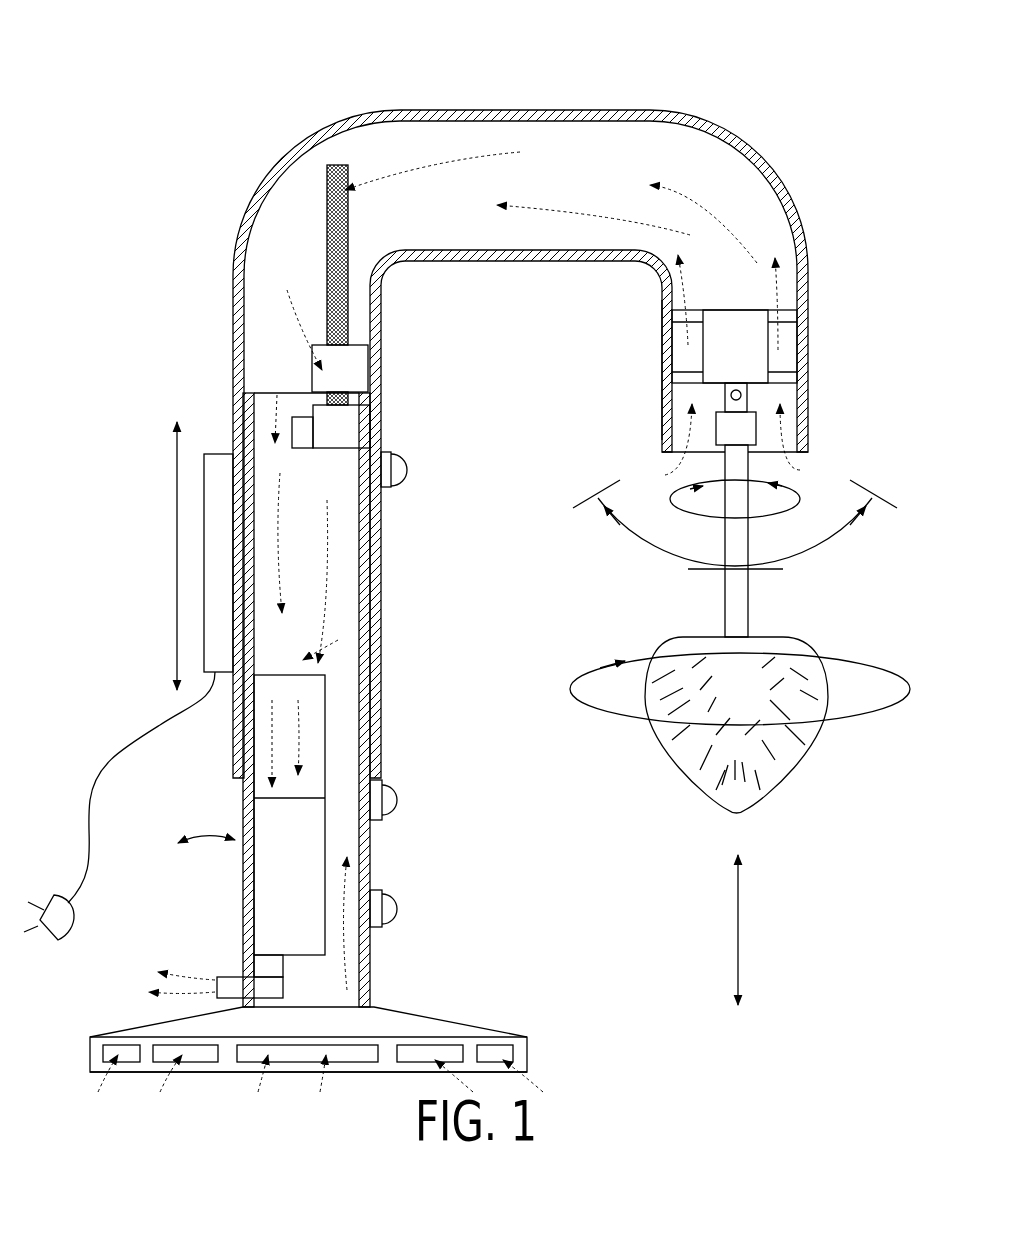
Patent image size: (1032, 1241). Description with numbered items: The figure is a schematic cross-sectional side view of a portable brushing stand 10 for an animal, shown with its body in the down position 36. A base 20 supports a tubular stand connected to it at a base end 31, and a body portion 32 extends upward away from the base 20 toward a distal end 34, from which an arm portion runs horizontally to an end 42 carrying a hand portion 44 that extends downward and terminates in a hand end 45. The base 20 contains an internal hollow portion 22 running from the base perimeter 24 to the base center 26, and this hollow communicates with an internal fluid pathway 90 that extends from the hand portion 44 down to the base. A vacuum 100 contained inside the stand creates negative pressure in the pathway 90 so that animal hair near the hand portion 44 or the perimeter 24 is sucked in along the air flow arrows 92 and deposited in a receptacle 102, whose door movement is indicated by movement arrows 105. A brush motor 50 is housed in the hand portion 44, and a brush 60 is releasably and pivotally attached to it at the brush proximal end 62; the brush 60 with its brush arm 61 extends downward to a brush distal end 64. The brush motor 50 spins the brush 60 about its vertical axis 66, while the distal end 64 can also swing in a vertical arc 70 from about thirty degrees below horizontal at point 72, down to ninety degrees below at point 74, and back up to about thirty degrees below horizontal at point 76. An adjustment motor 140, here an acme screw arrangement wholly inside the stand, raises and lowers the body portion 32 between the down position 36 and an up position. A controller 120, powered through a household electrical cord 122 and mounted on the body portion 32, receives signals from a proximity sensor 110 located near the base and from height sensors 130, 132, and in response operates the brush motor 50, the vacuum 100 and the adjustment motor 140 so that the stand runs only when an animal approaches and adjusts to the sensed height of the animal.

The portable brushing stand 10 is at (250, 95).
The base 20 is at (470, 1030).
The internal hollow portion 22 is at (297, 1058).
The perimeter 24 is at (100, 1050).
The center 26 is at (345, 1005).
The base end 31 is at (385, 990).
The body portion 32 is at (372, 562).
The distal end 34 is at (405, 285).
The down position 36 is at (150, 578).
The end 42 is at (780, 140).
The hand portion 44 is at (662, 355).
The hand end 45 is at (660, 453).
The brush motor 50 is at (752, 335).
The brush 60 is at (780, 755).
The brush arm 61 is at (750, 605).
The proximal end 62 is at (790, 482).
The brush distal end 64 is at (675, 793).
The vertical axis 66 is at (738, 907).
The vertical arc 70 is at (600, 515).
The horizontal point 72 is at (585, 498).
The horizontal point 74 is at (700, 572).
The horizontal point 76 is at (868, 495).
The internal fluid pathway 90 is at (425, 130).
The air flow arrows 92 is at (475, 155).
The vacuum 100 is at (262, 725).
The receptacle 102 is at (280, 905).
The movement arrows 105 is at (195, 838).
The proximity sensor 110 is at (397, 906).
The controller 120 is at (215, 505).
The electrical cord 122 is at (105, 800).
The height sensor 130 is at (397, 798).
The height sensor 132 is at (400, 465).
The adjustment motor 140 is at (345, 418).